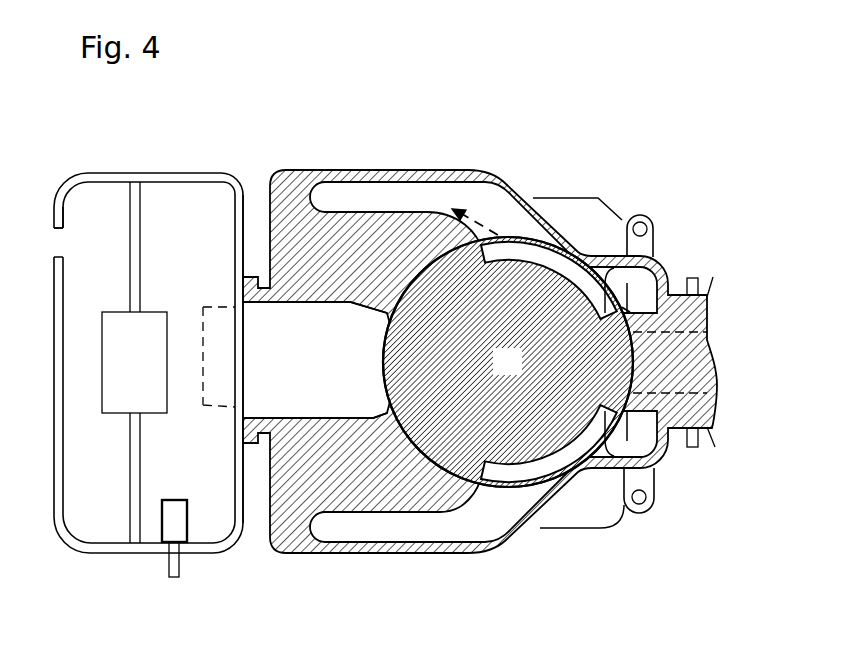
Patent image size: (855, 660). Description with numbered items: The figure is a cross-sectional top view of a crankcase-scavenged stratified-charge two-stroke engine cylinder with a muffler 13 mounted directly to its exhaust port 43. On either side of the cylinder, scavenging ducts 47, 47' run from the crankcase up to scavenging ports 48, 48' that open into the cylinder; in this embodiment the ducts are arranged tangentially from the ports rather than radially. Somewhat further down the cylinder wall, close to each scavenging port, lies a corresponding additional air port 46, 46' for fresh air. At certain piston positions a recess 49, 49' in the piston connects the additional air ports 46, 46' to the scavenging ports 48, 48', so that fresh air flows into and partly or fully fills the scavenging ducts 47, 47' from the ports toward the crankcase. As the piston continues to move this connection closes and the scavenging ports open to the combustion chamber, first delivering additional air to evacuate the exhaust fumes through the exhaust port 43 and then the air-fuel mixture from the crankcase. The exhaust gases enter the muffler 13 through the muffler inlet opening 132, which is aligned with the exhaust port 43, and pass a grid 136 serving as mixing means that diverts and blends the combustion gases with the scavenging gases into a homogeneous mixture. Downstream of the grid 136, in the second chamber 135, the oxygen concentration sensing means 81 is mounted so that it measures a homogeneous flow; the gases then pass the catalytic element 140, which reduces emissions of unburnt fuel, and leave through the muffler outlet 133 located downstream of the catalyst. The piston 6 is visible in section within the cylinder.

The piston 6 is at (508, 362).
The muffler 13 is at (196, 146).
The exhaust port 43 is at (333, 387).
The additional air port 46 is at (670, 304).
The additional air port 46' is at (673, 470).
The scavenging duct 47 is at (483, 217).
The scavenging duct 47' is at (483, 519).
The scavenging port 48 is at (549, 233).
The scavenging port 48' is at (549, 491).
The recess in the piston 49 is at (600, 236).
The recess in the piston 49' is at (598, 494).
The oxygen concentration sensing means 81 is at (172, 530).
The muffler inlet opening 132 is at (243, 380).
The muffler outlet 133 is at (66, 239).
The second chamber 135 is at (338, 360).
The grid 136 is at (203, 347).
The catalytic element 140 is at (112, 373).